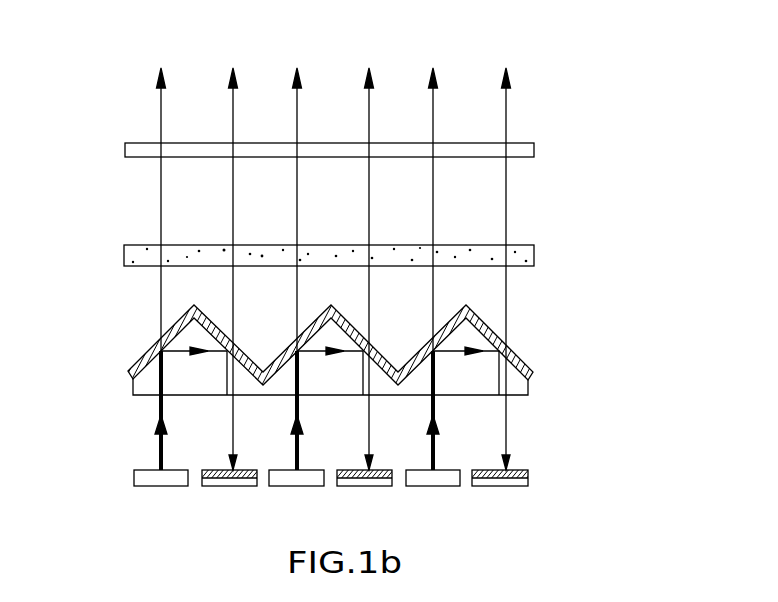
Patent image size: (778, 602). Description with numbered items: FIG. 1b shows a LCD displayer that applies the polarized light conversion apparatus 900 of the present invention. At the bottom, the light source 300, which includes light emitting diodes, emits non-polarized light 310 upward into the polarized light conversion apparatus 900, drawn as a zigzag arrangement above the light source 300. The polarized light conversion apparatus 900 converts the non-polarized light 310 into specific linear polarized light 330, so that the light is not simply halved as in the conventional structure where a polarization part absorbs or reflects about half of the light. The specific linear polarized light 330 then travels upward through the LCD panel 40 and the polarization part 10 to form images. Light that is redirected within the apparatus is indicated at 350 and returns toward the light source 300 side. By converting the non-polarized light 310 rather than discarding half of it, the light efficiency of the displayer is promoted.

The polarization part 10 is at (534, 148).
The LCD panel 40 is at (534, 255).
The light source 300 is at (133, 469).
The non-polarized light 310 is at (152, 403).
The specific linear polarized light 330 is at (160, 123).
The reflected light 350 is at (220, 403).
The polarized light conversion apparatus 900 is at (545, 299).